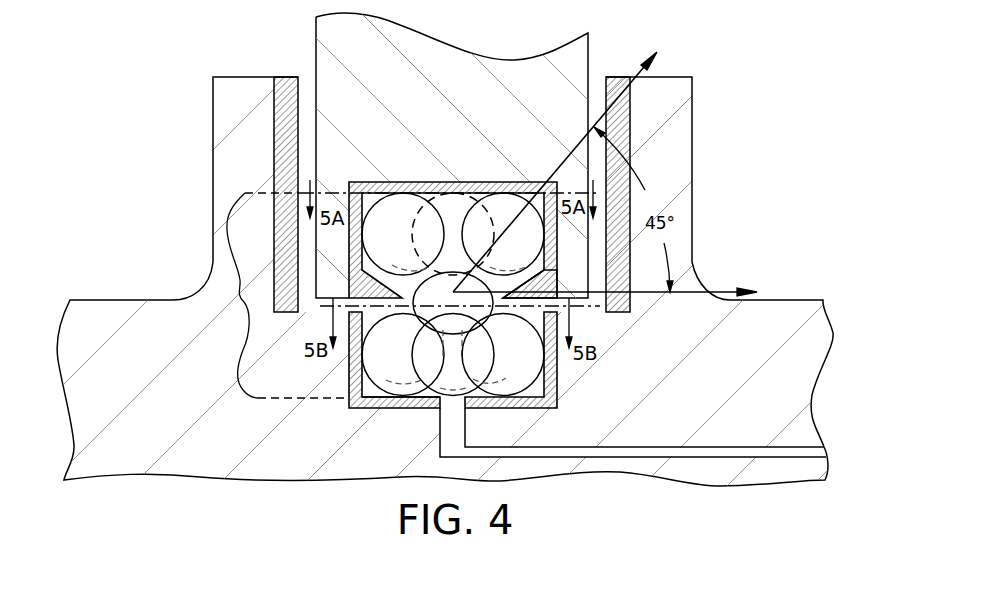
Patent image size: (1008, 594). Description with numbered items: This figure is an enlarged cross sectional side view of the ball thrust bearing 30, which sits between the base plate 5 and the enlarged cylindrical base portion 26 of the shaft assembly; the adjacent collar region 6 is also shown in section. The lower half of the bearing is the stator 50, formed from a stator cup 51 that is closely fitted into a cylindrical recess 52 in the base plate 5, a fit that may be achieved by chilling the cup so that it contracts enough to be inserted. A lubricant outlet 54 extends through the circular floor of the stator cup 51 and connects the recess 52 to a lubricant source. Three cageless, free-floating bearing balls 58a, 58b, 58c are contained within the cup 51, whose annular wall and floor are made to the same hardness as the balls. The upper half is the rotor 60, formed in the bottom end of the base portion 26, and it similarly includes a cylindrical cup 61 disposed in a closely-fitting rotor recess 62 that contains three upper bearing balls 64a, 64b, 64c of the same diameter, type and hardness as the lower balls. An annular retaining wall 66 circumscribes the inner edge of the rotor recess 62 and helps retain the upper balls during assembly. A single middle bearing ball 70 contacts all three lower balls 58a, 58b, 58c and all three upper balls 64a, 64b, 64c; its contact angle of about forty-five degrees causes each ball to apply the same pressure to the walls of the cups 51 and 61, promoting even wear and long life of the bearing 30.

The base plate 5 is at (179, 398).
The collar 6 is at (675, 197).
The enlarged cylindrical base portion 26 is at (446, 134).
The ball thrust bearing 30 is at (239, 284).
The stator 50 is at (340, 381).
The stator cup 51 is at (507, 404).
The cylindrical recess 52 is at (560, 397).
The lubricant outlet 54 is at (418, 380).
The bearing ball 58a is at (372, 364).
The bearing ball 58b is at (453, 355).
The bearing ball 58c is at (504, 364).
The rotor 60 is at (340, 241).
The cylindrical cup 61 is at (503, 183).
The rotor recess 62 is at (525, 276).
The upper bearing ball 64a is at (375, 242).
The upper bearing ball 64b is at (439, 213).
The upper bearing ball 64c is at (508, 242).
The annular retaining wall 66 is at (536, 295).
The middle bearing ball 70 is at (421, 302).